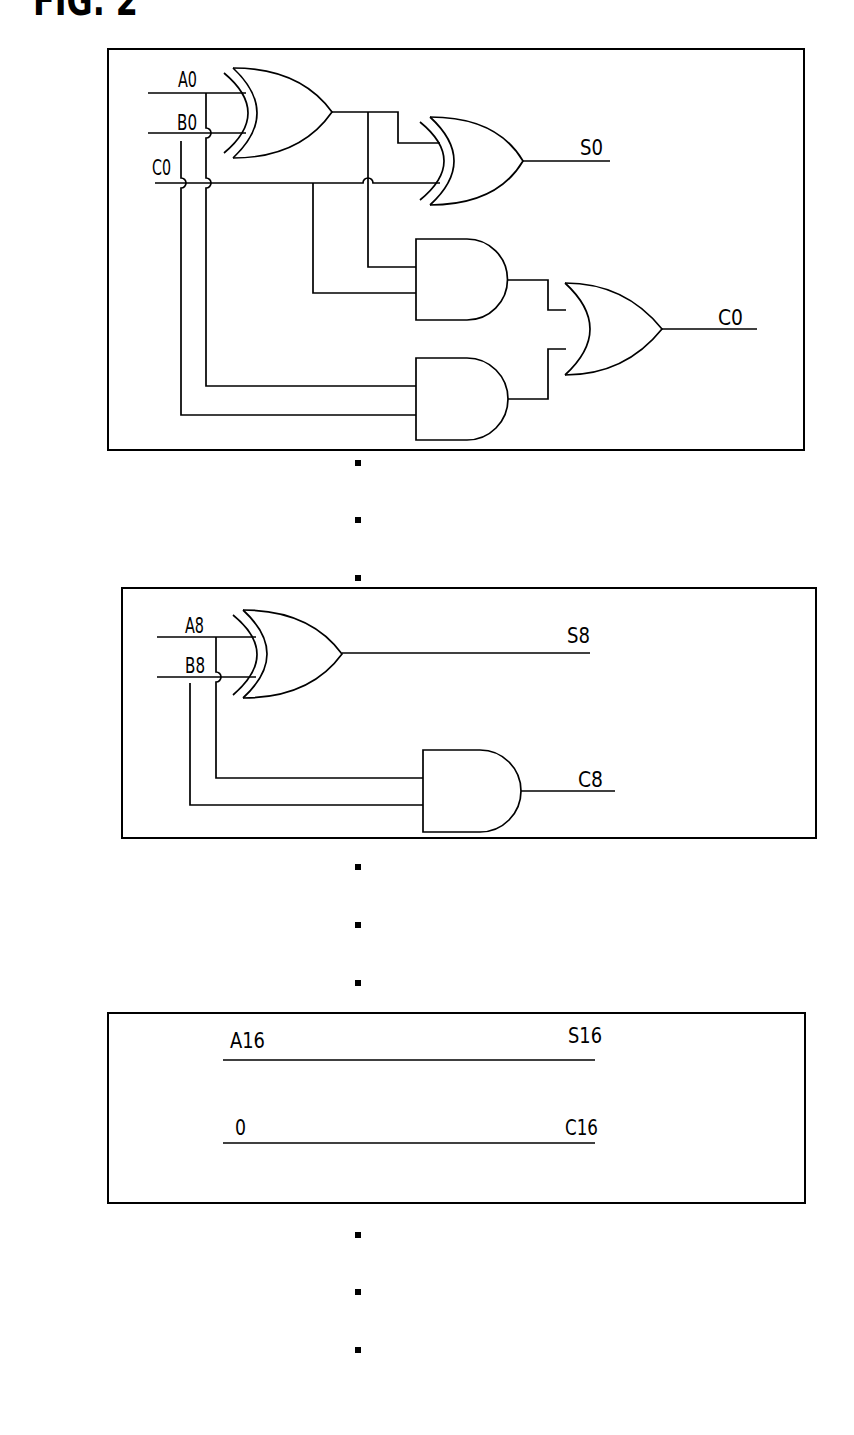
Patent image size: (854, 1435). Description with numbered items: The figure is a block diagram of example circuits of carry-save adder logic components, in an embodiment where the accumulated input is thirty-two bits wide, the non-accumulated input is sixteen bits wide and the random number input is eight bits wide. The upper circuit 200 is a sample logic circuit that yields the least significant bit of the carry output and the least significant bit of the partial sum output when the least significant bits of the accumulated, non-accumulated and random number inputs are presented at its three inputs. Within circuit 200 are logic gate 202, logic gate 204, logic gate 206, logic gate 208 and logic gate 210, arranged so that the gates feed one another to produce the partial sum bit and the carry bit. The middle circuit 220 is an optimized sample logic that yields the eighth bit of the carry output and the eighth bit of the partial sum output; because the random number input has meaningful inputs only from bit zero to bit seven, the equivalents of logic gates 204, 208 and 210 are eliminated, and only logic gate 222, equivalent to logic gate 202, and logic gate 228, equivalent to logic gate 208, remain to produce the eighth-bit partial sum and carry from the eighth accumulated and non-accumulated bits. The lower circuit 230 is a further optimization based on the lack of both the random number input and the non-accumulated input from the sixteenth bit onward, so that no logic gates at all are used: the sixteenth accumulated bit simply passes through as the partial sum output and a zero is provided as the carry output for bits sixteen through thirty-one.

The circuit 200 is at (456, 249).
The logic gate 202 is at (278, 113).
The logic gate 204 is at (471, 161).
The logic gate 206 is at (462, 279).
The logic gate 208 is at (462, 399).
The logic gate 210 is at (613, 329).
The circuit 220 is at (469, 713).
The logic gate 222 is at (287, 654).
The logic gate 228 is at (472, 791).
The circuit 230 is at (456, 1108).